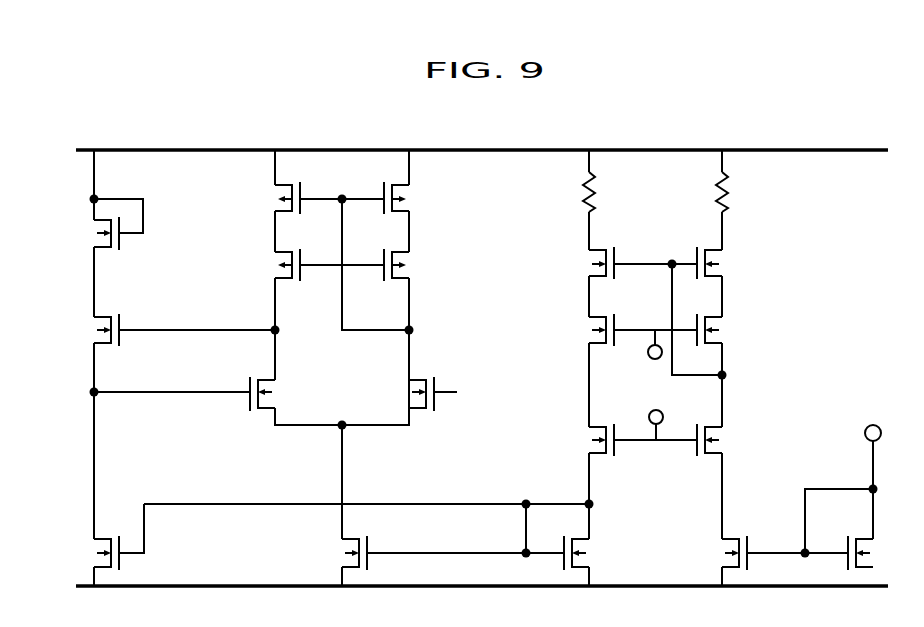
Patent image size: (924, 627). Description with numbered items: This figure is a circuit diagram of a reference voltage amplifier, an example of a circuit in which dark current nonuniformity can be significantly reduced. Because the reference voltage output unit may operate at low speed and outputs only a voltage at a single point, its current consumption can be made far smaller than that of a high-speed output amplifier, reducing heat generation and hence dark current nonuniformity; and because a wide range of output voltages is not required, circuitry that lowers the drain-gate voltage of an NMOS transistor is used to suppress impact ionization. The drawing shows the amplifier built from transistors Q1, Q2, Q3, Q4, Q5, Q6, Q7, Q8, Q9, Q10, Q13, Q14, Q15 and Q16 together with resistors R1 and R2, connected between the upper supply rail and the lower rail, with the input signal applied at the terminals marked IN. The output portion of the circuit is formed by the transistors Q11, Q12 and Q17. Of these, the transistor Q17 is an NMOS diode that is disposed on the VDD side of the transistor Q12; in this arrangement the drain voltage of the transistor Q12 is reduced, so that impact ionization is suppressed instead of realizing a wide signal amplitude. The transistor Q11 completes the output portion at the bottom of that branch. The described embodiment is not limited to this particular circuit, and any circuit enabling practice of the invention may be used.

The transistor Q1 is at (874, 562).
The transistor Q2 is at (618, 455).
The transistor Q3 is at (725, 266).
The transistor Q4 is at (600, 242).
The transistor Q5 is at (590, 546).
The transistor Q6 is at (345, 547).
The transistor Q7 is at (430, 412).
The transistor Q8 is at (280, 394).
The transistor Q9 is at (412, 202).
The transistor Q10 is at (282, 217).
The transistor Q11 is at (92, 547).
The transistor Q12 is at (184, 339).
The transistor Q13 is at (725, 333).
The transistor Q14 is at (600, 314).
The transistor Q15 is at (412, 270).
The transistor Q16 is at (282, 283).
The NMOS diode Q17 is at (133, 233).
The resistor R1 is at (733, 203).
The resistor R2 is at (600, 203).
The input terminal IN is at (765, 391).